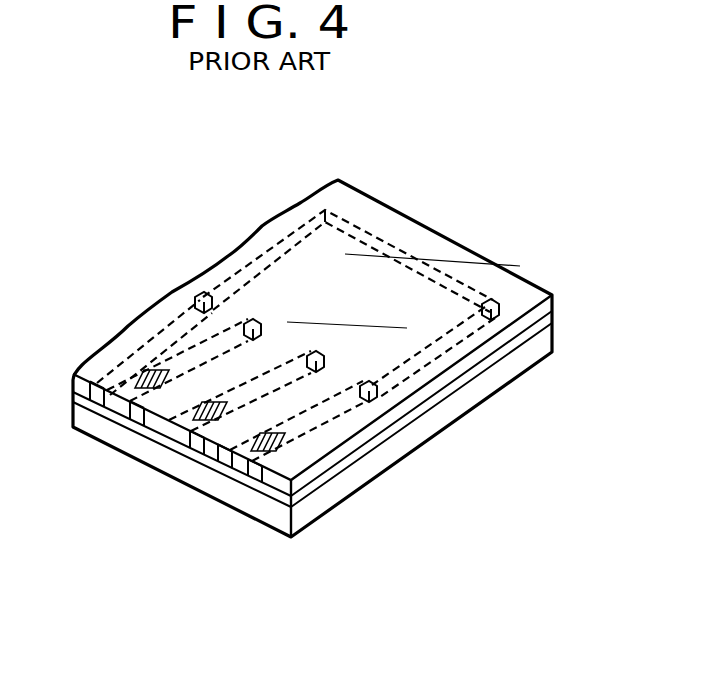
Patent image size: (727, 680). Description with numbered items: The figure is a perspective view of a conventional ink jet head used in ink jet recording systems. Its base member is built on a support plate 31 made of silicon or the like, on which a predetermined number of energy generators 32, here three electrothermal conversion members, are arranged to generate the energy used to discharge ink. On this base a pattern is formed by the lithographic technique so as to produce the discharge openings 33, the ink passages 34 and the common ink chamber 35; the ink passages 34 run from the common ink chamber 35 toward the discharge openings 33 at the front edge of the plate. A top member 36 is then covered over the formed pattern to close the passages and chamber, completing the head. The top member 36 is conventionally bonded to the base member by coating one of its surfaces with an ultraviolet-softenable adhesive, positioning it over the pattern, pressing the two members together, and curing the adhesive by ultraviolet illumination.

The support plate 31 is at (373, 462).
The energy generators 32 is at (140, 398).
The discharge openings 33 is at (108, 398).
The ink passages 34 is at (197, 333).
The common ink chamber 35 is at (422, 295).
The top member 36 is at (543, 307).